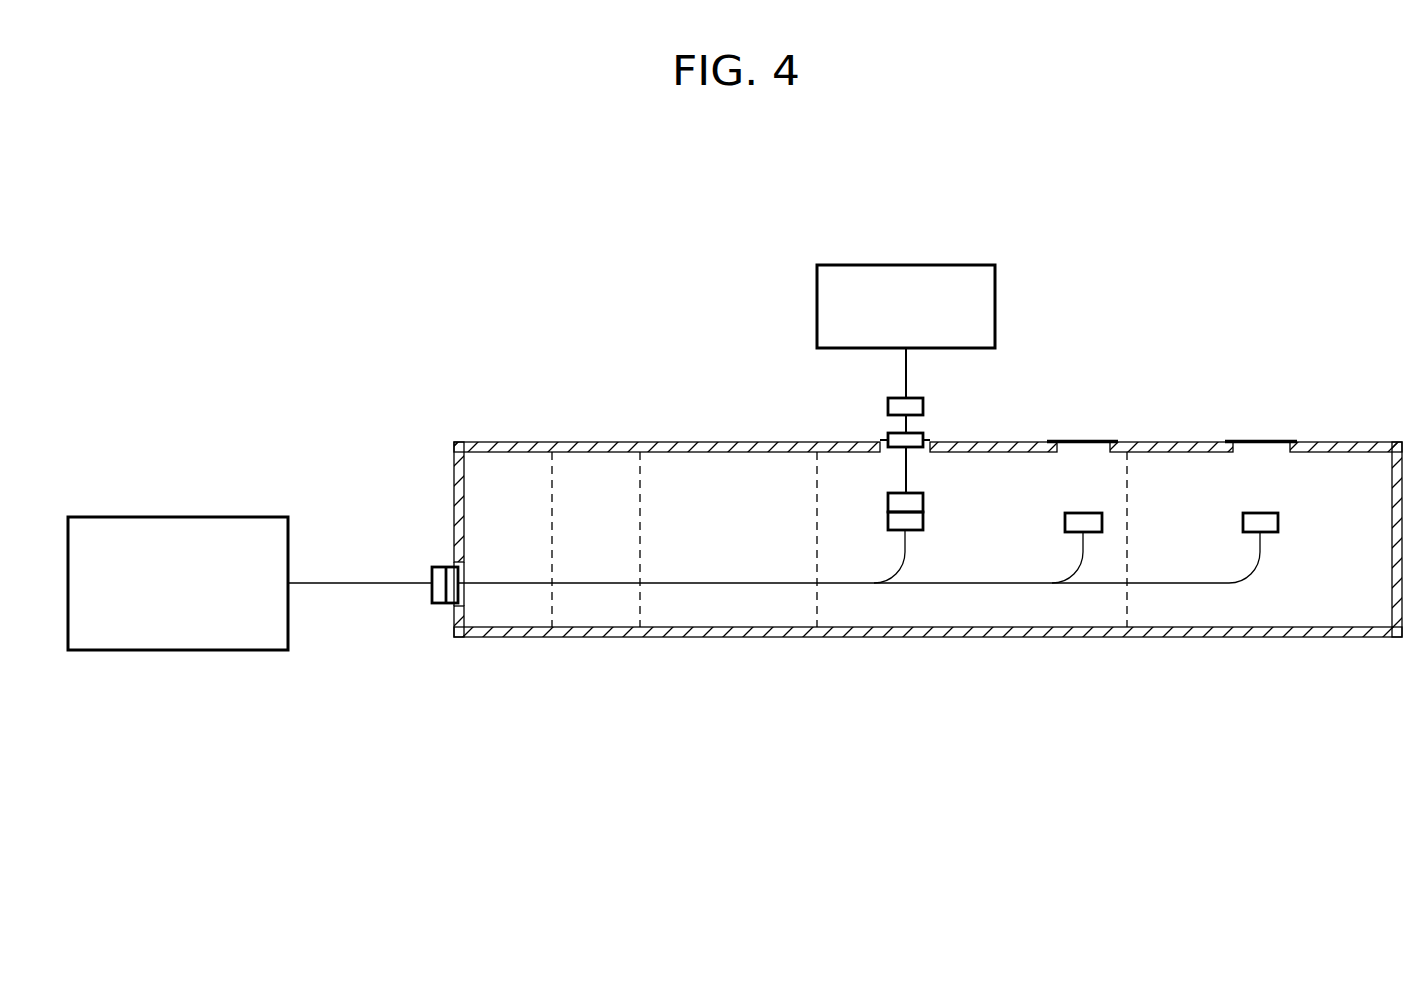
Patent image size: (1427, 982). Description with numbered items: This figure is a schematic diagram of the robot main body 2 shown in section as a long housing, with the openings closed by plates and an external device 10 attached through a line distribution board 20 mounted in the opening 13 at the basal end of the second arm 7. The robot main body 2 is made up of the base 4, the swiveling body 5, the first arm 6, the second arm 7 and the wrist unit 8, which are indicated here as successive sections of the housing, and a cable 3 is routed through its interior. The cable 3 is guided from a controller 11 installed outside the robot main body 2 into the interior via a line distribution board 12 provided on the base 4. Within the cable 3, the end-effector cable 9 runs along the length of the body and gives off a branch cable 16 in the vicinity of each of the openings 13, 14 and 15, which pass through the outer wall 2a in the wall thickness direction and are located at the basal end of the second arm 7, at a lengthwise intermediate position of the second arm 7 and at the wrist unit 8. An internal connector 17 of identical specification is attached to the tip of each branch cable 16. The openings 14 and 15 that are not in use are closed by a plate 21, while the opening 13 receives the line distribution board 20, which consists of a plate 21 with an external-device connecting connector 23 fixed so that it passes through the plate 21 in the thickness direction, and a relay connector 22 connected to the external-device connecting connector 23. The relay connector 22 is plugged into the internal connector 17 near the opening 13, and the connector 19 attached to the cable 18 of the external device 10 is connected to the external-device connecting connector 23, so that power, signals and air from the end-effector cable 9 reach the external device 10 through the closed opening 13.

The robot main body 2 is at (520, 420).
The outer wall 2a is at (690, 441).
The cable 3 is at (850, 596).
The base 4 is at (500, 640).
The swiveling body 5 is at (583, 640).
The first arm 6 is at (707, 640).
The second arm 7 is at (938, 640).
The wrist unit 8 is at (1260, 650).
The end-effector cable 9 is at (782, 590).
The external device 10 is at (902, 265).
The controller 11 is at (163, 517).
The line distribution board 12 is at (449, 565).
The opening 13 is at (930, 449).
The opening 14 is at (1112, 452).
The opening 15 is at (1290, 452).
The branch cable 16 is at (906, 555).
The internal connector 17 is at (923, 522).
The cable 18 is at (906, 366).
The connector 19 is at (923, 398).
The line distribution board 20 is at (866, 429).
The plate 21 is at (932, 438).
The relay connector 22 is at (923, 500).
The external-device connecting connector 23 is at (898, 453).